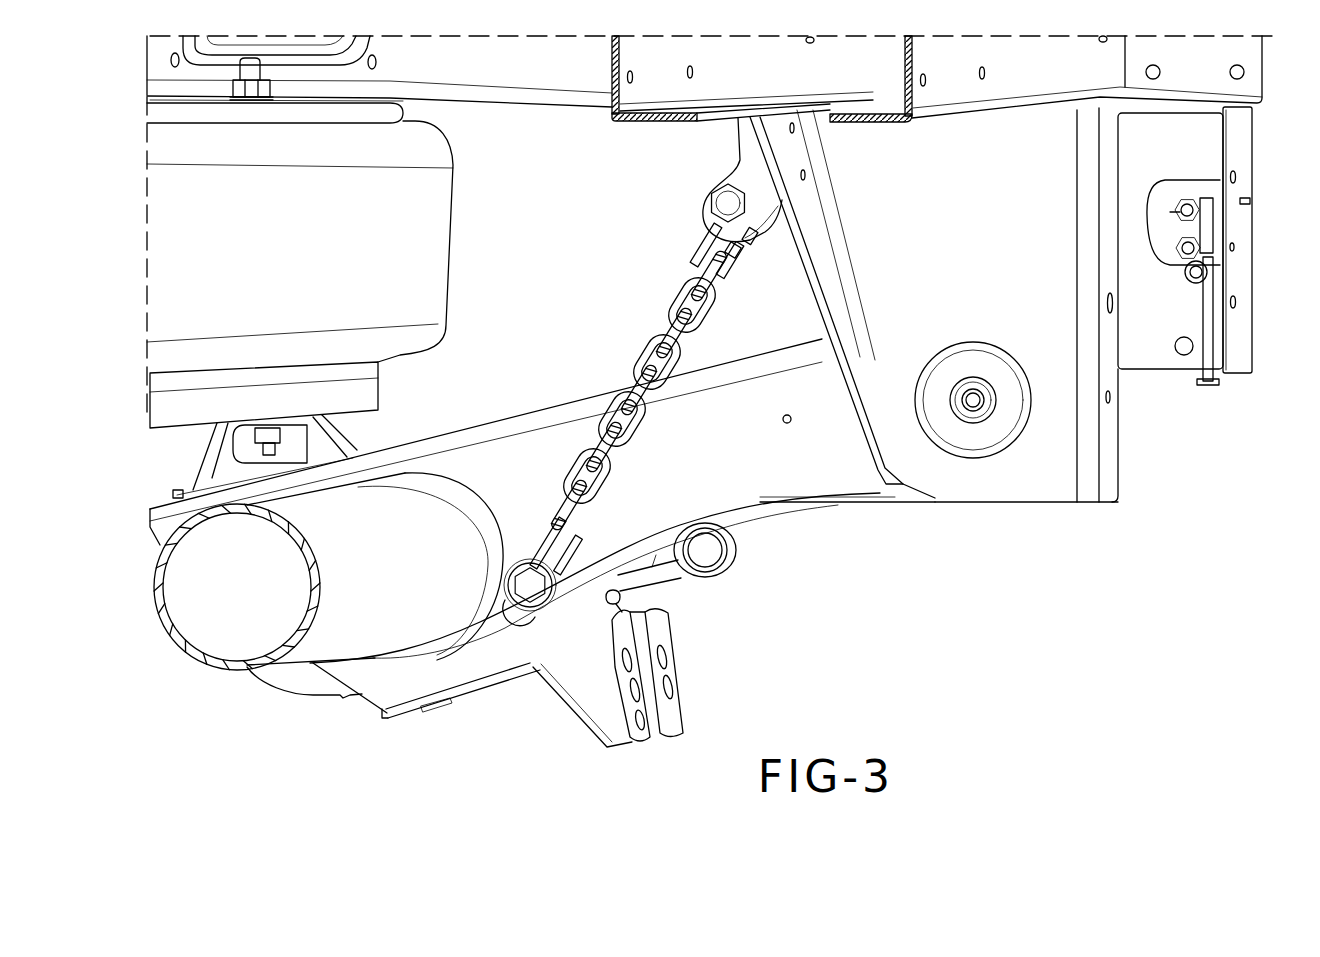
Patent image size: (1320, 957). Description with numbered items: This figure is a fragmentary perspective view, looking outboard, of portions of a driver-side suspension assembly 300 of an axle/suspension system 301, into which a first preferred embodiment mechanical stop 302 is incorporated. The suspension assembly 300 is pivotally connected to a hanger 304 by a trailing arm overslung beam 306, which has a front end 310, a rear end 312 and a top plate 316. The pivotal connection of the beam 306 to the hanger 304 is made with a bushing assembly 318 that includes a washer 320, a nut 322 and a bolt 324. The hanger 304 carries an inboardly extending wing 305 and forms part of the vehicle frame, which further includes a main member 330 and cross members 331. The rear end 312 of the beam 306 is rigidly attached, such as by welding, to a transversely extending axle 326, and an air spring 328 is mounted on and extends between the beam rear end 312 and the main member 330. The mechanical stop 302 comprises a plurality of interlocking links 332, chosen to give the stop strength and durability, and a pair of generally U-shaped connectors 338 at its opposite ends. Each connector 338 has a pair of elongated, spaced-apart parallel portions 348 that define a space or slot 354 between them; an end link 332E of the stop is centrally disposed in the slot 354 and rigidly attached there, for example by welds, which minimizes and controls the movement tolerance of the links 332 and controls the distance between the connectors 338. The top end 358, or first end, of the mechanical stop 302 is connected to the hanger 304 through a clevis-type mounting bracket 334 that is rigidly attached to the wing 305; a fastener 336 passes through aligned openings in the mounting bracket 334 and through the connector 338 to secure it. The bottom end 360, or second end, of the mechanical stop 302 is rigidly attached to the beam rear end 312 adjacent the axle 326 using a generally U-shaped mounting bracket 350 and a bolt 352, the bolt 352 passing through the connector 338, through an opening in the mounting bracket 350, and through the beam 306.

The suspension assembly 300 is at (1132, 516).
The axle/suspension system 301 is at (950, 607).
The mechanical stop 302 is at (658, 390).
The hanger 304 is at (1150, 164).
The wing 305 is at (785, 152).
The trailing arm overslung beam 306 is at (805, 512).
The front end 310 is at (875, 485).
The rear end 312 is at (387, 460).
The top plate 316 is at (493, 417).
The bushing assembly 318 is at (1007, 453).
The washer 320 is at (1010, 412).
The nut 322 is at (993, 398).
The bolt 324 is at (960, 405).
The axle 326 is at (395, 604).
The air spring 328 is at (452, 193).
The main member 330 is at (533, 81).
The cross members 331 is at (908, 122).
The interlocking links 332 is at (702, 320).
The end link 332E is at (722, 285).
The clevis-type mounting bracket 334 is at (738, 163).
The fastener 336 is at (727, 200).
The U-shaped connector 338 is at (688, 270).
The elongated spaced-apart parallel portions 348 is at (710, 250).
The U-shaped mounting bracket 350 is at (620, 612).
The bolt 352 is at (528, 588).
The space or slot 354 is at (752, 236).
The top end 358 is at (700, 226).
The bottom end 360 is at (523, 527).